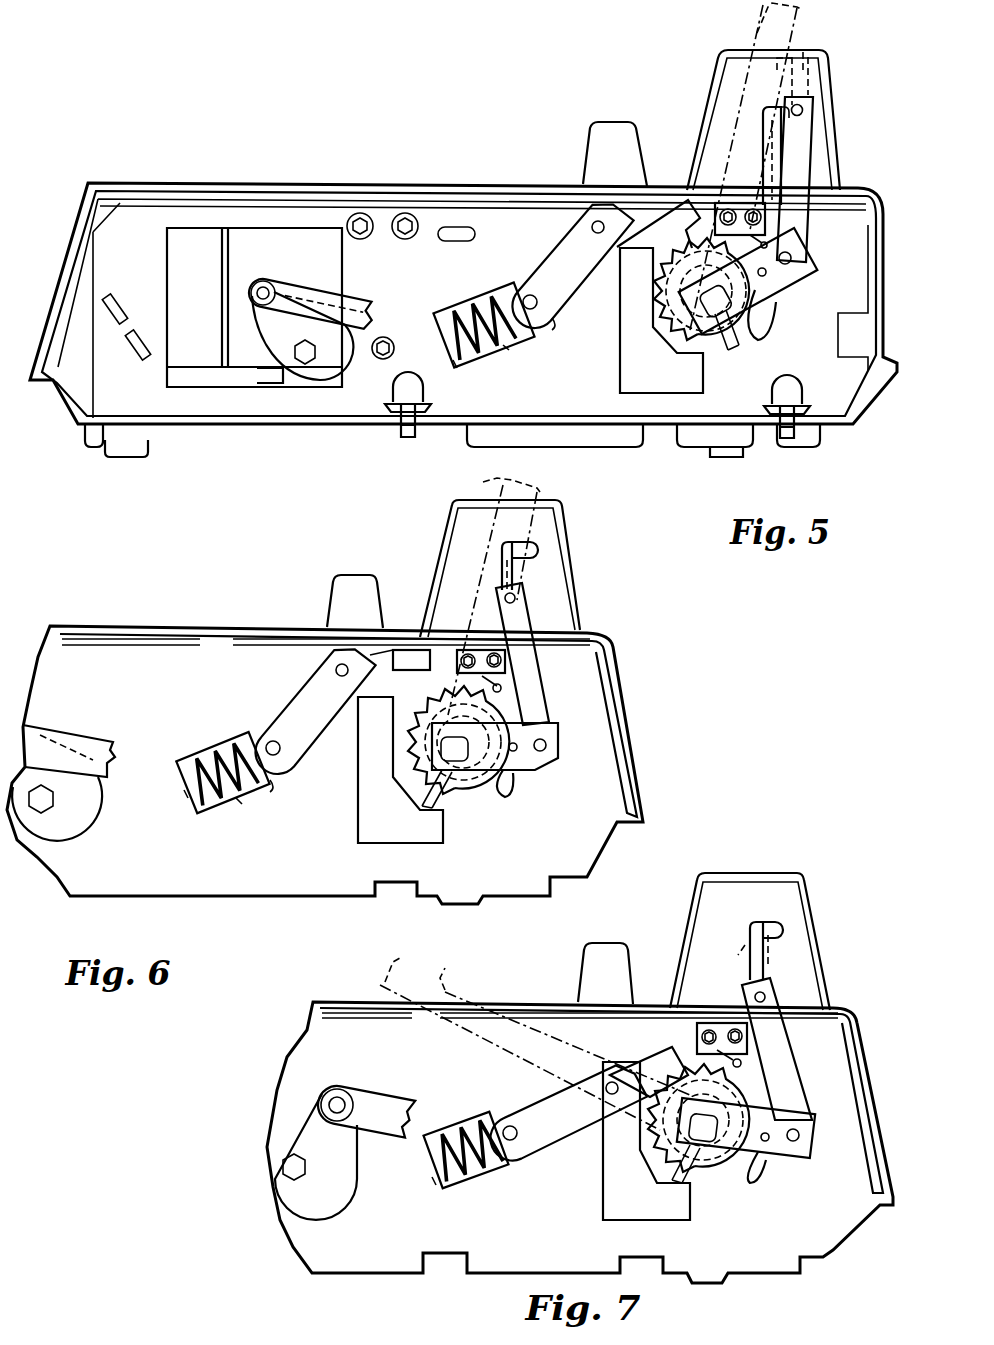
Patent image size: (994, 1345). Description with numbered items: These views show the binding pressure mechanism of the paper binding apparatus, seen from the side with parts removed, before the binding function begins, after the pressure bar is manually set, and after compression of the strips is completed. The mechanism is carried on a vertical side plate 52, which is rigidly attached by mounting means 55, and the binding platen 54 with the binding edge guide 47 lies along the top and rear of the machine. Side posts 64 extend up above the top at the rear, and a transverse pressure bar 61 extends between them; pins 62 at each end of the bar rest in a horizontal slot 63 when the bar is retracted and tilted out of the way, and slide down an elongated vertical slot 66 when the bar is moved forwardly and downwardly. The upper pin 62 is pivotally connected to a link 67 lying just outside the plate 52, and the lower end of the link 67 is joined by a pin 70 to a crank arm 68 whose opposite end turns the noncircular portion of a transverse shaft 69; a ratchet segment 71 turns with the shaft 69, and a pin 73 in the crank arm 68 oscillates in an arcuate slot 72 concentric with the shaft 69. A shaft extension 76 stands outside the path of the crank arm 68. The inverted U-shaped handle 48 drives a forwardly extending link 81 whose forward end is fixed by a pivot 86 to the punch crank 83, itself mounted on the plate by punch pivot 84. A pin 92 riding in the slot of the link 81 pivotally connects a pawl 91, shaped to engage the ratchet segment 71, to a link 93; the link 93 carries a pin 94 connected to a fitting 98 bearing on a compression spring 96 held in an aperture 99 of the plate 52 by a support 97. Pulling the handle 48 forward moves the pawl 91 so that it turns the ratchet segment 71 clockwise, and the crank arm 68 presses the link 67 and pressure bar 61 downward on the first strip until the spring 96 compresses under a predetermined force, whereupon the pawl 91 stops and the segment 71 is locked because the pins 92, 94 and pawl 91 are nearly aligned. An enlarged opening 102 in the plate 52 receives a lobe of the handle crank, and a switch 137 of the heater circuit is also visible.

In FIG. 5, the binding edge guide 47 is at (598, 160).
In FIG. 6, the binding edge guide 47 is at (355, 601).
In FIG. 7, the binding edge guide 47 is at (605, 973).
In FIG. 5, the handle 48 is at (755, 28).
In FIG. 6, the handle 48 is at (500, 486).
In FIG. 7, the handle 48 is at (450, 978).
In FIG. 5, the side plates 52 is at (580, 375).
In FIG. 6, the side plates 52 is at (284, 862).
In FIG. 7, the side plates 52 is at (542, 1262).
In FIG. 5, the binding platen 54 is at (513, 185).
In FIG. 5, the mounting means 55 is at (428, 400).
In FIG. 5, the pressure bar 61 is at (818, 62).
In FIG. 6, the pressure bar 61 is at (505, 560).
In FIG. 7, the pressure bar 61 is at (756, 950).
In FIG. 5, the pins 62 is at (803, 110).
In FIG. 6, the pins 62 is at (515, 597).
In FIG. 7, the pins 62 is at (765, 995).
In FIG. 5, the horizontal slot 63 is at (762, 112).
In FIG. 6, the horizontal slot 63 is at (517, 545).
In FIG. 5, the side posts 64 is at (728, 90).
In FIG. 6, the side posts 64 is at (500, 568).
In FIG. 7, the side posts 64 is at (750, 941).
In FIG. 5, the vertical slot 66 is at (765, 122).
In FIG. 6, the vertical slot 66 is at (502, 577).
In FIG. 7, the vertical slot 66 is at (755, 928).
In FIG. 5, the link 67 is at (810, 137).
In FIG. 6, the link 67 is at (528, 688).
In FIG. 7, the link 67 is at (782, 1070).
In FIG. 5, the crank arm 68 is at (795, 280).
In FIG. 6, the crank arm 68 is at (550, 762).
In FIG. 7, the crank arm 68 is at (775, 1155).
In FIG. 5, the shaft 69 is at (715, 312).
In FIG. 6, the shaft 69 is at (457, 765).
In FIG. 7, the shaft 69 is at (705, 1145).
In FIG. 5, the pin 70 is at (790, 258).
In FIG. 6, the pin 70 is at (548, 747).
In FIG. 7, the pin 70 is at (800, 1137).
In FIG. 5, the ratchet segment 71 is at (658, 292).
In FIG. 6, the ratchet segment 71 is at (415, 740).
In FIG. 7, the ratchet segment 71 is at (662, 1140).
In FIG. 5, the arcuate slot 72 is at (770, 322).
In FIG. 6, the arcuate slot 72 is at (505, 790).
In FIG. 7, the arcuate slot 72 is at (752, 1185).
In FIG. 5, the pin 73 is at (765, 278).
In FIG. 6, the pin 73 is at (516, 760).
In FIG. 7, the pin 73 is at (768, 1150).
In FIG. 5, the shaft extension 76 is at (742, 348).
In FIG. 6, the shaft extension 76 is at (428, 800).
In FIG. 7, the shaft extension 76 is at (672, 1185).
In FIG. 5, the link 81 is at (360, 285).
In FIG. 6, the link 81 is at (112, 728).
In FIG. 7, the link 81 is at (365, 1110).
In FIG. 5, the punch crank 83 is at (340, 375).
In FIG. 6, the punch crank 83 is at (85, 812).
In FIG. 7, the punch crank 83 is at (340, 1190).
In FIG. 5, the punch pivot 84 is at (305, 365).
In FIG. 6, the punch pivot 84 is at (43, 812).
In FIG. 7, the punch pivot 84 is at (294, 1167).
In FIG. 5, the pivot 86 is at (263, 281).
In FIG. 7, the pivot 86 is at (330, 1090).
In FIG. 5, the pawl 91 is at (658, 215).
In FIG. 6, the pawl 91 is at (400, 650).
In FIG. 7, the pawl 91 is at (645, 1068).
In FIG. 5, the pin 92 is at (593, 227).
In FIG. 6, the pin 92 is at (336, 672).
In FIG. 7, the pin 92 is at (605, 1080).
In FIG. 5, the link 93 is at (568, 255).
In FIG. 6, the link 93 is at (292, 708).
In FIG. 7, the link 93 is at (548, 1100).
In FIG. 5, the pin 94 is at (527, 296).
In FIG. 6, the pin 94 is at (270, 742).
In FIG. 7, the pin 94 is at (515, 1143).
In FIG. 5, the compression spring 96 is at (492, 292).
In FIG. 6, the compression spring 96 is at (210, 750).
In FIG. 7, the compression spring 96 is at (480, 1185).
In FIG. 5, the support 97 is at (457, 368).
In FIG. 6, the support 97 is at (185, 795).
In FIG. 7, the support 97 is at (450, 1185).
In FIG. 5, the fitting 98 is at (552, 322).
In FIG. 6, the fitting 98 is at (272, 785).
In FIG. 5, the aperture 99 is at (503, 348).
In FIG. 6, the aperture 99 is at (235, 800).
In FIG. 5, the enlarged opening 102 is at (620, 392).
In FIG. 6, the enlarged opening 102 is at (362, 840).
In FIG. 7, the enlarged opening 102 is at (603, 1195).
In FIG. 5, the switch 137 is at (742, 205).
In FIG. 6, the switch 137 is at (478, 650).
In FIG. 7, the switch 137 is at (733, 1025).